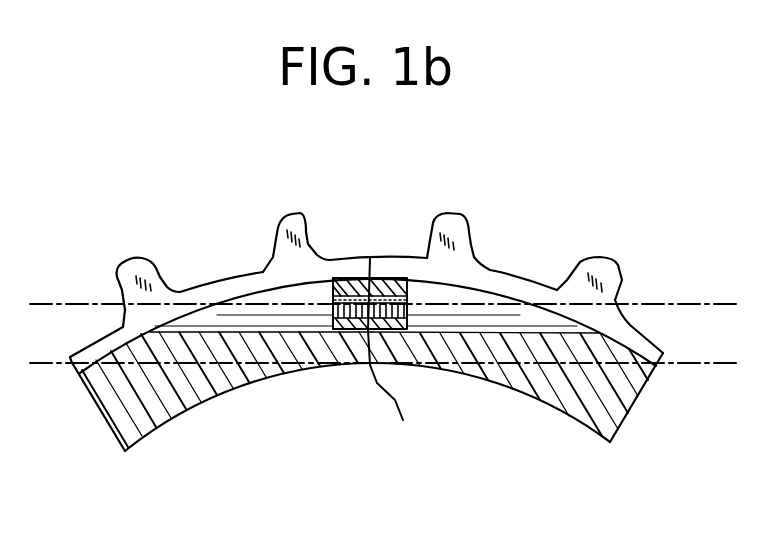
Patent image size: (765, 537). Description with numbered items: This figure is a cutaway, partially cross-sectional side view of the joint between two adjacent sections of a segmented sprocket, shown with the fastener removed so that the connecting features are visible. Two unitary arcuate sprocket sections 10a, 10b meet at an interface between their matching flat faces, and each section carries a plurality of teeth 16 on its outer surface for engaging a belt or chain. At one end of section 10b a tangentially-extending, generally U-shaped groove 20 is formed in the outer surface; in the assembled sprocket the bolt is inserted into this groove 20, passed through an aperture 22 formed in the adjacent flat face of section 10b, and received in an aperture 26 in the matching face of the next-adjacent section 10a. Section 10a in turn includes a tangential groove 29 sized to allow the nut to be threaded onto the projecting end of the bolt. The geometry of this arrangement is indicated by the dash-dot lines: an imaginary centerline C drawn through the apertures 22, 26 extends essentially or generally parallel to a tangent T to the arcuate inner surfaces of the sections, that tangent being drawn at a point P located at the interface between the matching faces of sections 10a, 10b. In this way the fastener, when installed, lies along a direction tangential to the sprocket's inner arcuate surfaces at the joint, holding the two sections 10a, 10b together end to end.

The sprocket section 10a is at (180, 395).
The sprocket section 10b is at (540, 390).
The teeth 16 is at (452, 227).
The U-shaped groove 20 is at (477, 297).
The aperture 22 is at (390, 300).
The aperture 26 is at (342, 322).
The tangential groove 29 is at (273, 297).
The point P is at (392, 354).
The centerline C is at (692, 302).
The tangent T is at (700, 363).